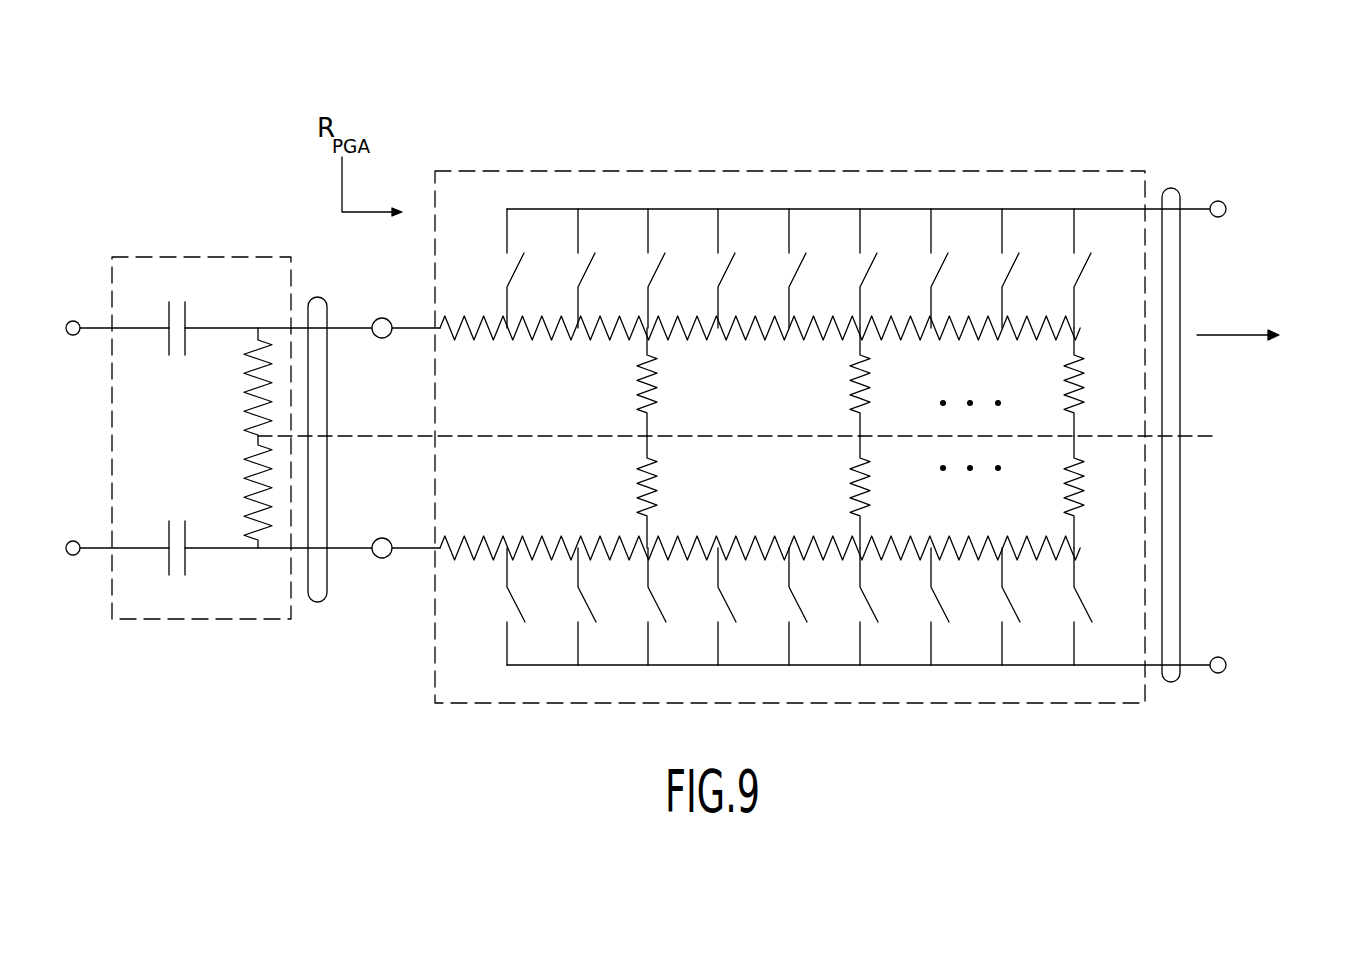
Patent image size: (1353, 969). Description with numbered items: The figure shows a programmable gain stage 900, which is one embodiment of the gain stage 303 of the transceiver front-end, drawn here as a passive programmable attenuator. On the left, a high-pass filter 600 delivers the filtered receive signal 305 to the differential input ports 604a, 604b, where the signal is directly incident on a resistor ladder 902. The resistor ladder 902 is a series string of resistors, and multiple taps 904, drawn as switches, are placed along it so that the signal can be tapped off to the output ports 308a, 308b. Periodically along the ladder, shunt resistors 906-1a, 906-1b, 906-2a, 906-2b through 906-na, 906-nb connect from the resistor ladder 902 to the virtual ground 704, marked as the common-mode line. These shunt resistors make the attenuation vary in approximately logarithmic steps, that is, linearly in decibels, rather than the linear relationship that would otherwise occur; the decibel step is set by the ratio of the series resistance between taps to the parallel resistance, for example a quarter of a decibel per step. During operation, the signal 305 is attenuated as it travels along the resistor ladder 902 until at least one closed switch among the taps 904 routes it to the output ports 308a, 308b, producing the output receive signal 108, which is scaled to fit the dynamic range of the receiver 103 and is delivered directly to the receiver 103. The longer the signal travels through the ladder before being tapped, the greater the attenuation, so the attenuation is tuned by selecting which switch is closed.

The high-pass filter 600 is at (186, 257).
The filtered receive signal 305 is at (318, 297).
The port 604a is at (383, 338).
The port 604b is at (382, 558).
The programmable gain stage 900 is at (538, 171).
The gain stage 303 is at (880, 121).
The taps 904 is at (512, 278).
The resistor ladder 902 is at (527, 338).
The resistor 906-1a is at (657, 362).
The resistor 906-1b is at (658, 478).
The resistor 906-2a is at (855, 392).
The resistor 906-2b is at (855, 458).
The resistor 906-na is at (1065, 370).
The resistor 906-nb is at (1065, 505).
The receive signal 108 is at (1168, 188).
The output port 308a is at (1225, 204).
The output port 308b is at (1222, 672).
The receiver 103 is at (1292, 322).
The virtual ground 704 is at (1245, 453).